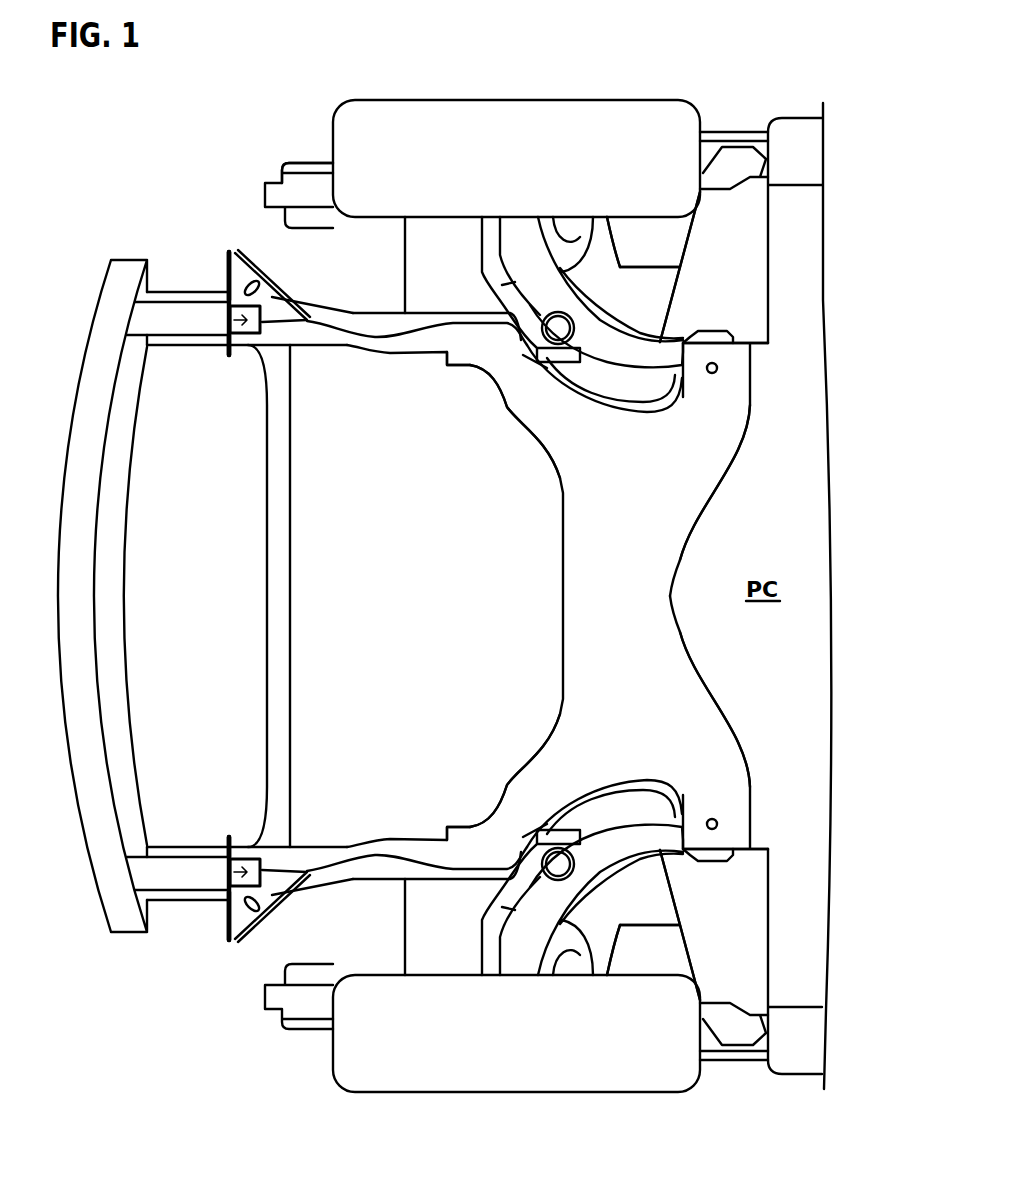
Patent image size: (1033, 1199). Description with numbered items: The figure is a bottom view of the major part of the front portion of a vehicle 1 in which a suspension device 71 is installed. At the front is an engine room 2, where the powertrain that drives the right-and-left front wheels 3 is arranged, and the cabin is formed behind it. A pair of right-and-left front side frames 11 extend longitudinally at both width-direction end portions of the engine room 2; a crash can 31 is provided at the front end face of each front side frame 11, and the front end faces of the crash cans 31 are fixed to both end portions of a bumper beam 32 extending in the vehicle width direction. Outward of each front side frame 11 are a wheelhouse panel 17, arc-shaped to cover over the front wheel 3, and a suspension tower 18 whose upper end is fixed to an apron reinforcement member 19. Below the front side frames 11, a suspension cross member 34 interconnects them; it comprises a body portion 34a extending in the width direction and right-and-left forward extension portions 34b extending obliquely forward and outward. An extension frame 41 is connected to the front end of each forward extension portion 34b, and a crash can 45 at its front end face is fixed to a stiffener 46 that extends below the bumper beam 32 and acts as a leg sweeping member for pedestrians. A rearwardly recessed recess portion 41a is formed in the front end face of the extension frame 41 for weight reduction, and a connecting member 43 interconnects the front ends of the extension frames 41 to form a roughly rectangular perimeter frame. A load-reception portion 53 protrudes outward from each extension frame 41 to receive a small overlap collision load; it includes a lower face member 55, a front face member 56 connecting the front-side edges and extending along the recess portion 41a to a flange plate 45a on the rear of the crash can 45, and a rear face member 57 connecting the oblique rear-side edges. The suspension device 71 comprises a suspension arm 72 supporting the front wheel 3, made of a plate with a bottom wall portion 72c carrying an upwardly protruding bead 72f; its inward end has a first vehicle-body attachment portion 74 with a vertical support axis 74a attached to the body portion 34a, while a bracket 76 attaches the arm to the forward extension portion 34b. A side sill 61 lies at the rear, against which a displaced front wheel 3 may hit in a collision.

The vehicle 1 is at (300, 120).
The engine room 2 is at (425, 526).
The front wheel 3 is at (553, 100).
The front side frame 11 is at (337, 320).
The wheelhouse panel 17 is at (442, 237).
The suspension tower 18 is at (607, 217).
The apron reinforcement member 19 is at (312, 165).
The crash can 31 is at (157, 297).
The bumper beam 32 is at (125, 610).
The suspension cross member 34 is at (752, 432).
The body portion 34a is at (700, 486).
The forward extension portion 34b is at (500, 368).
The extension frame 41 is at (375, 333).
The recess portion 41a is at (229, 318).
The connecting member 43 is at (270, 737).
The crash can 45 is at (140, 318).
The flange plate 45a is at (229, 340).
The stiffener 46 is at (110, 303).
The load-reception portion 53 is at (240, 245).
The lower face member 55 is at (272, 298).
The front face member 56 is at (230, 270).
The rear face member 57 is at (263, 272).
The side sill 61 is at (797, 130).
The suspension device 71 is at (600, 273).
The suspension arm 72 is at (620, 332).
The bottom wall portion 72c is at (513, 230).
The bead 72f is at (622, 393).
The first vehicle-body attachment portion 74 is at (749, 604).
The support axis 74a is at (718, 367).
The bracket 76 is at (533, 348).